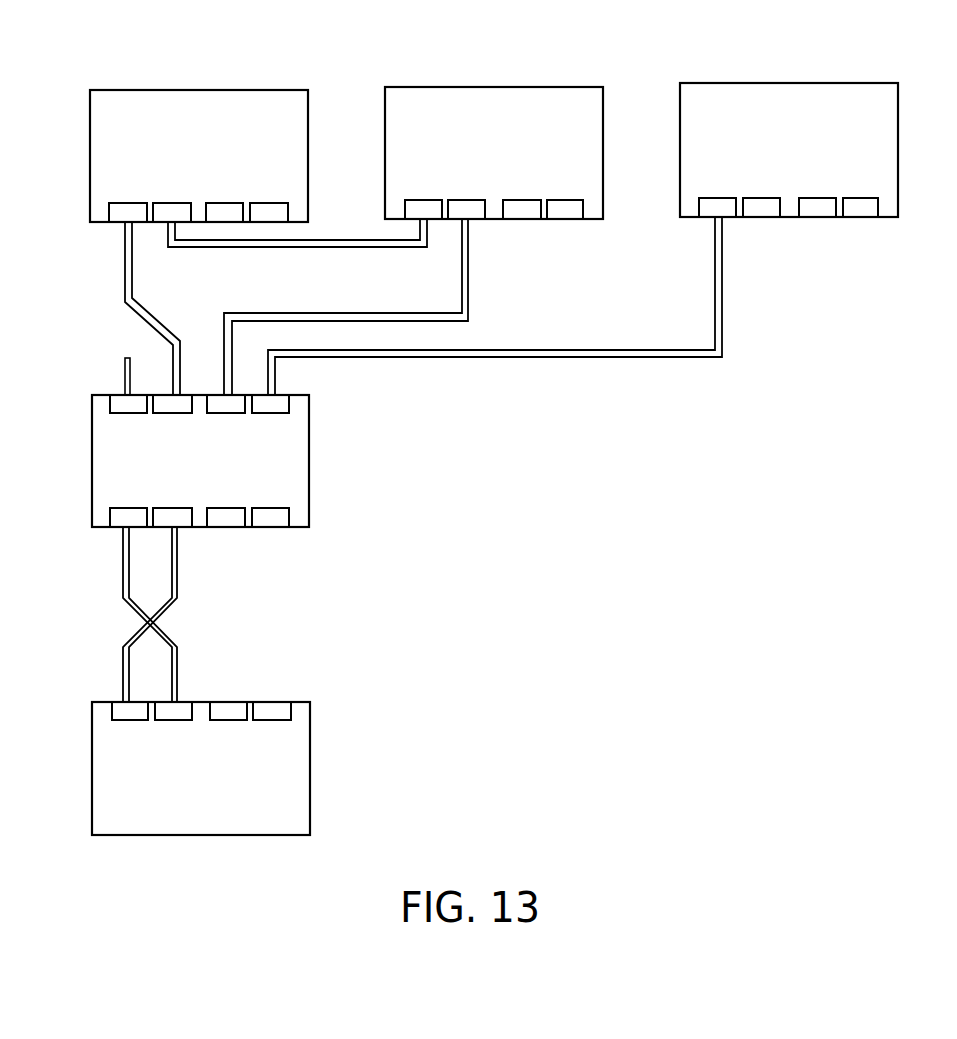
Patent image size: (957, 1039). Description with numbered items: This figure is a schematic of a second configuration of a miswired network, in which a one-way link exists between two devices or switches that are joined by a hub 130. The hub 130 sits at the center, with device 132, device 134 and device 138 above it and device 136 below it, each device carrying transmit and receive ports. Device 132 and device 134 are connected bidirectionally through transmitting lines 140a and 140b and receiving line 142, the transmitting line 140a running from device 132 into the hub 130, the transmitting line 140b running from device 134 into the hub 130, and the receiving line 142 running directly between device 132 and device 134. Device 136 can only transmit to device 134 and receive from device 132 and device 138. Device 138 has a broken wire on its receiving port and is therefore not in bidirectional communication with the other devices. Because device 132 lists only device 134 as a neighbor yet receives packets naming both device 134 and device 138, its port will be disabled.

The hub 130 is at (309, 460).
The device 132 is at (180, 90).
The device 134 is at (492, 87).
The device 136 is at (310, 768).
The device 138 is at (795, 83).
The transmitting line 140a is at (124, 254).
The transmitting line 140b is at (468, 270).
The receiving line 142 is at (241, 248).